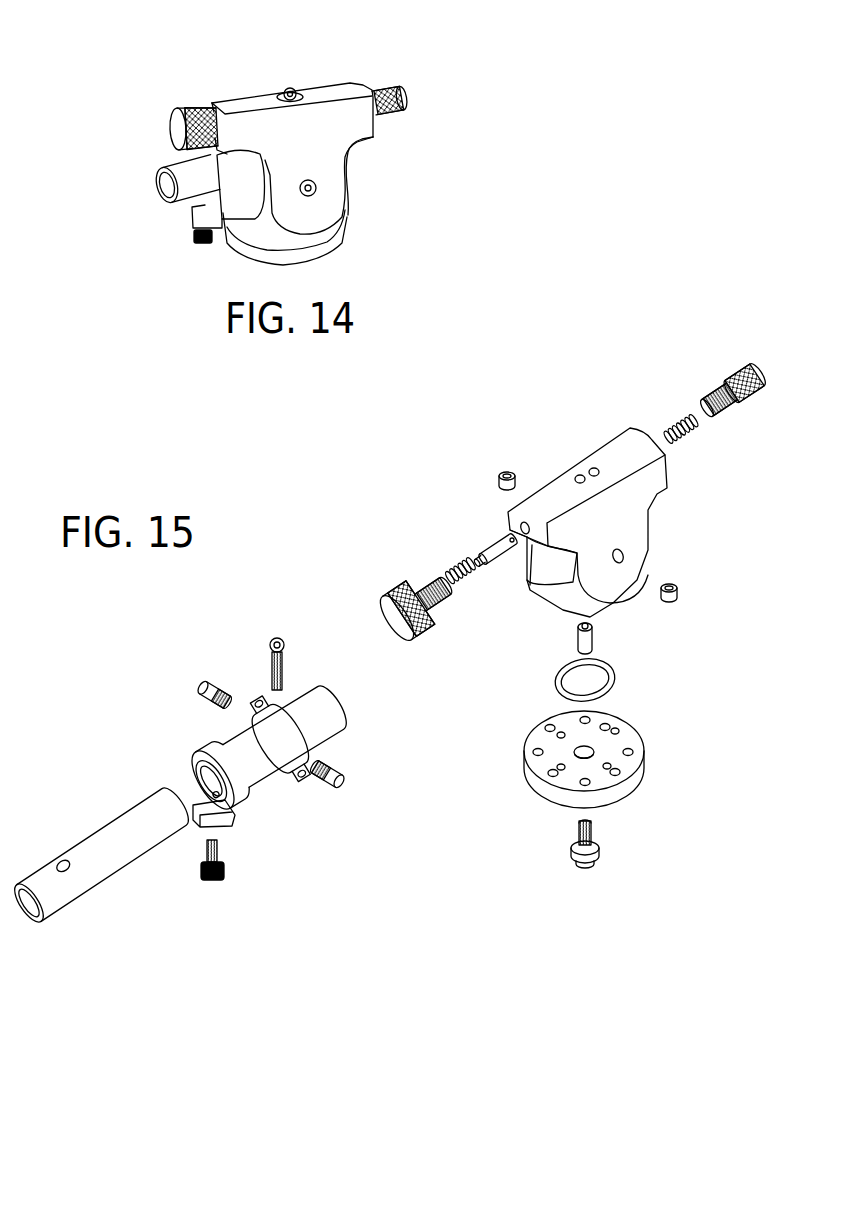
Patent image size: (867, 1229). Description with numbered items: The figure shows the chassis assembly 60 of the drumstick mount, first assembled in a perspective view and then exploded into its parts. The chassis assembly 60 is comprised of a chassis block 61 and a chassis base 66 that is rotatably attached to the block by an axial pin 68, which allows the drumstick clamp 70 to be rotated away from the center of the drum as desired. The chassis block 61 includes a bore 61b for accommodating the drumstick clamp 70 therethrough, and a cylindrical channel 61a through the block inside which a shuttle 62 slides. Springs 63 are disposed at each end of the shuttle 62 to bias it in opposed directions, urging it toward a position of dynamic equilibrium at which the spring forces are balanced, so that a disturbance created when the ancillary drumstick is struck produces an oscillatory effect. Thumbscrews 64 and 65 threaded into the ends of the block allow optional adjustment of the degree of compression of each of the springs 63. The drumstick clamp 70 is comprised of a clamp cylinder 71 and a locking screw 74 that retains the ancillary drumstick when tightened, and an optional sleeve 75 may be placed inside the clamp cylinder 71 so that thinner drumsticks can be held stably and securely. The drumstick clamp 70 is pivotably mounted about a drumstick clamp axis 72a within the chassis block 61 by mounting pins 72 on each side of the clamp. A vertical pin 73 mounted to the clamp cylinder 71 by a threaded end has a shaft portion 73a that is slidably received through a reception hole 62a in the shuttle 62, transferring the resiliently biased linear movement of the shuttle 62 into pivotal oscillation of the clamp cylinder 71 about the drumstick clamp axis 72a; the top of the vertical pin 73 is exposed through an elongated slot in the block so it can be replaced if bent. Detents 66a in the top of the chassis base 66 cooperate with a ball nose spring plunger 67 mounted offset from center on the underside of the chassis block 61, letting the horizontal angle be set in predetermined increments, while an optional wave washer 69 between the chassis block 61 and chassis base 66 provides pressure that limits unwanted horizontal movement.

In FIG. 14, the chassis assembly 60 is at (293, 175).
In FIG. 15, the chassis assembly 60 is at (545, 662).
In FIG. 15, the chassis block 61 is at (573, 463).
In FIG. 15, the cylindrical channel 61a is at (524, 538).
In FIG. 15, the bore 61b is at (553, 566).
In FIG. 15, the shuttle 62 is at (490, 543).
In FIG. 15, the reception hole 62a is at (507, 546).
In FIG. 15, the springs 63 is at (455, 567).
In FIG. 14, the thumbscrew 64 is at (404, 96).
In FIG. 15, the thumbscrew 64 is at (756, 373).
In FIG. 14, the thumbscrew 65 is at (172, 122).
In FIG. 15, the thumbscrew 65 is at (392, 595).
In FIG. 15, the chassis base 66 is at (651, 756).
In FIG. 15, the detents 66a is at (612, 730).
In FIG. 15, the ball nose spring plunger 67 is at (593, 632).
In FIG. 15, the axial pin 68 is at (634, 892).
In FIG. 15, the wave washer 69 is at (616, 680).
In FIG. 15, the drumstick clamp 70 is at (213, 851).
In FIG. 14, the clamp cylinder 71 is at (353, 182).
In FIG. 15, the clamp cylinder 71 is at (244, 750).
In FIG. 15, the mounting pins 72 is at (204, 688).
In FIG. 14, the drumstick clamp axis 72a is at (311, 191).
In FIG. 14, the vertical pin 73 is at (286, 93).
In FIG. 15, the vertical pin 73 is at (272, 650).
In FIG. 15, the shaft portion 73a is at (284, 662).
In FIG. 14, the locking screw 74 is at (202, 244).
In FIG. 15, the locking screw 74 is at (216, 888).
In FIG. 14, the sleeve 75 is at (183, 198).
In FIG. 15, the sleeve 75 is at (92, 877).